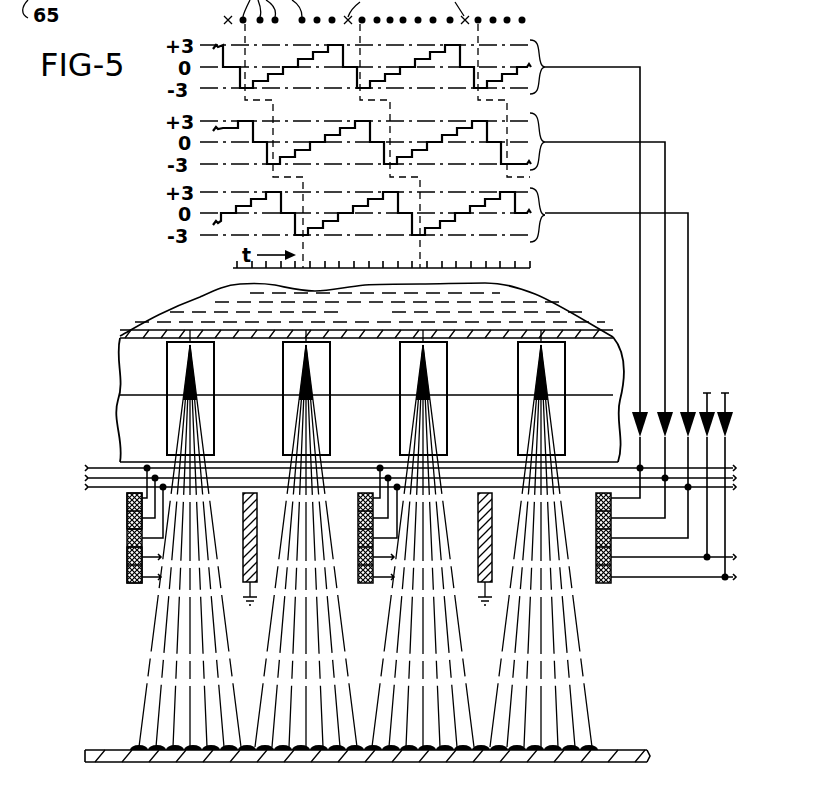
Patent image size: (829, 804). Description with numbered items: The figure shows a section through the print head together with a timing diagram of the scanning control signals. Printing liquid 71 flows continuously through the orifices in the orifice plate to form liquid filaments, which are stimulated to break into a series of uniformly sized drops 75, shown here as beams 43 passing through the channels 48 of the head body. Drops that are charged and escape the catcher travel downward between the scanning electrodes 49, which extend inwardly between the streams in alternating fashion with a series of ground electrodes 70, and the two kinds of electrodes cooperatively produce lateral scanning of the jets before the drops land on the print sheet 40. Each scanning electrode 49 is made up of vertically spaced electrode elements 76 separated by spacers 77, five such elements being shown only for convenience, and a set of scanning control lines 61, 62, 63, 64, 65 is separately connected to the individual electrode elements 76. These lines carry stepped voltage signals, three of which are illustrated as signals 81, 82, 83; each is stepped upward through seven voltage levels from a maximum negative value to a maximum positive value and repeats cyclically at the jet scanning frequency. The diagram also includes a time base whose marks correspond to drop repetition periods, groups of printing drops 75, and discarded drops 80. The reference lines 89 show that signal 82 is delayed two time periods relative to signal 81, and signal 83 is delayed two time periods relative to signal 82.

The print sheet 40 is at (113, 750).
The electron beam 43 is at (541, 335).
The beam channel aperture 48 is at (292, 364).
The scanning electrodes 49 is at (115, 578).
The scanning control line 61 is at (640, 101).
The scanning control line 62 is at (667, 159).
The scanning control line 63 is at (690, 230).
The scanning control line 64 is at (699, 393).
The scanning control line 65 is at (731, 393).
The ground electrodes 70 is at (243, 558).
The printing liquid 71 is at (385, 312).
The drops 75 is at (522, 17).
The electrode elements 76 is at (127, 536).
The spacers 77 is at (127, 563).
The discarded drops 80 is at (227, 19).
The scanning control signal 81 is at (457, 53).
The scanning control signal 82 is at (490, 132).
The scanning control signal 83 is at (515, 202).
The reference lines 89 is at (273, 105).